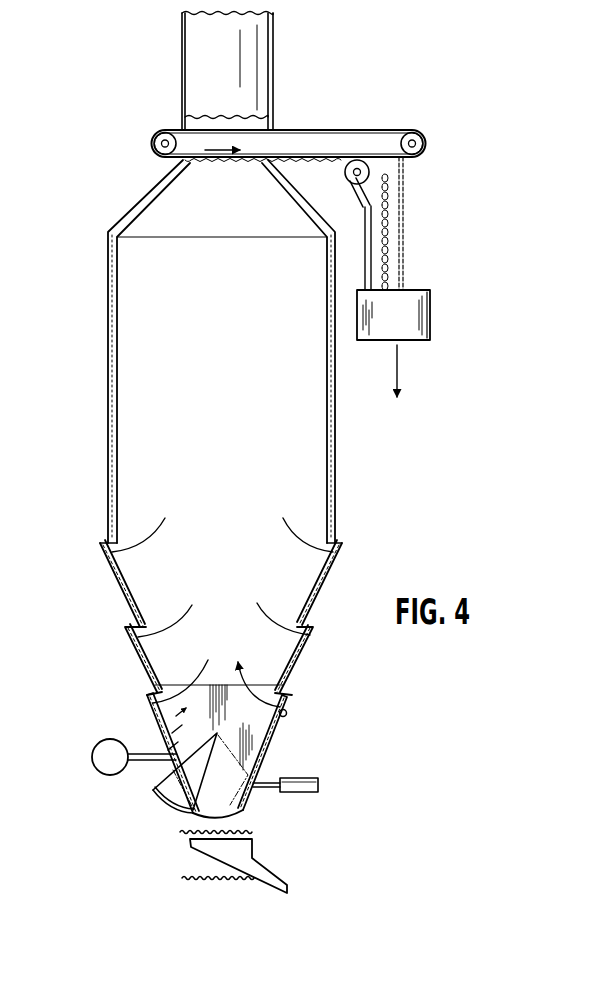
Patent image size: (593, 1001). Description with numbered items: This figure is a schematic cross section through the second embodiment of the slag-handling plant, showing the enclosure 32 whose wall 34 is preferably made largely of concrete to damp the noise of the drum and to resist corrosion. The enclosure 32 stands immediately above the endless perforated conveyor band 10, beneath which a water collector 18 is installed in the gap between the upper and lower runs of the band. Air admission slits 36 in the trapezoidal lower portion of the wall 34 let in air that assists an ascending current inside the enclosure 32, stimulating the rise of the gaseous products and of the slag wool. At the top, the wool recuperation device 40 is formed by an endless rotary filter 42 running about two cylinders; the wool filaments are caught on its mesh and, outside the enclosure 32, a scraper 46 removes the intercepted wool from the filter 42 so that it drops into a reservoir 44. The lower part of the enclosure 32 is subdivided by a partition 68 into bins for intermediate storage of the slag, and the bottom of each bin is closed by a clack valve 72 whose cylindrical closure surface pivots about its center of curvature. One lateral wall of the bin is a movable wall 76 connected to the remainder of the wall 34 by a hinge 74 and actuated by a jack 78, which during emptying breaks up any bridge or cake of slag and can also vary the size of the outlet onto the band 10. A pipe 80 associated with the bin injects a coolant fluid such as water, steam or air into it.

The perforated conveyor band 10 is at (183, 867).
The water collector 18 is at (250, 853).
The enclosure 32 is at (128, 270).
The wall 34 is at (110, 352).
The air admission slits 36 is at (343, 540).
The wool recuperation device 40 is at (312, 118).
The endless rotary filter 42 is at (370, 130).
The reservoir 44 is at (412, 300).
The scraper 46 is at (360, 182).
The partition 68 is at (143, 718).
The clack valve 72 is at (170, 793).
The hinge 74 is at (287, 713).
The movable wall 76 is at (273, 752).
The jack 78 is at (310, 792).
The pipe 80 is at (135, 762).